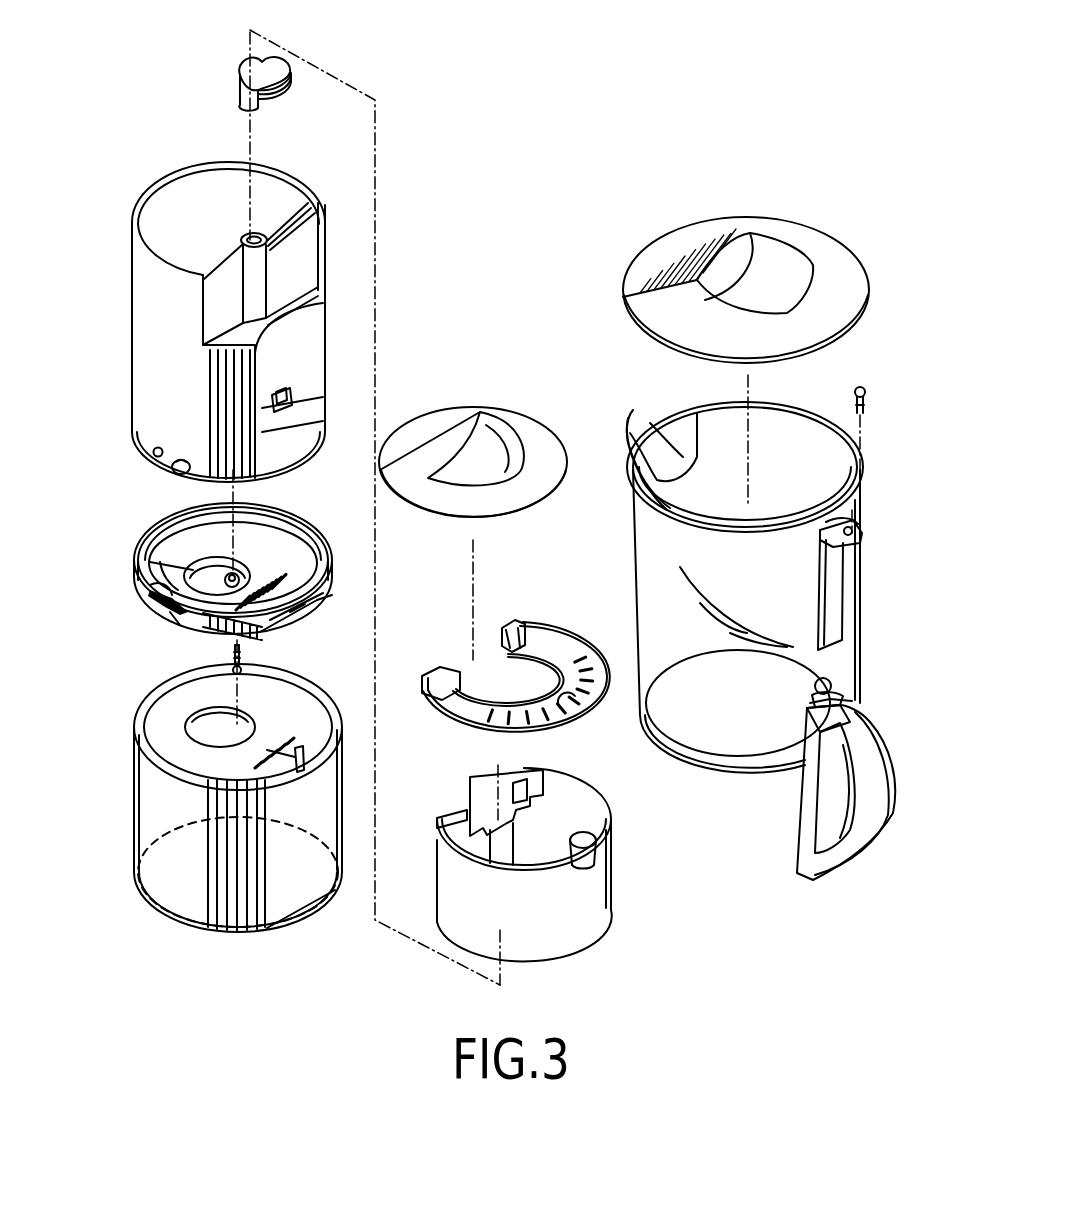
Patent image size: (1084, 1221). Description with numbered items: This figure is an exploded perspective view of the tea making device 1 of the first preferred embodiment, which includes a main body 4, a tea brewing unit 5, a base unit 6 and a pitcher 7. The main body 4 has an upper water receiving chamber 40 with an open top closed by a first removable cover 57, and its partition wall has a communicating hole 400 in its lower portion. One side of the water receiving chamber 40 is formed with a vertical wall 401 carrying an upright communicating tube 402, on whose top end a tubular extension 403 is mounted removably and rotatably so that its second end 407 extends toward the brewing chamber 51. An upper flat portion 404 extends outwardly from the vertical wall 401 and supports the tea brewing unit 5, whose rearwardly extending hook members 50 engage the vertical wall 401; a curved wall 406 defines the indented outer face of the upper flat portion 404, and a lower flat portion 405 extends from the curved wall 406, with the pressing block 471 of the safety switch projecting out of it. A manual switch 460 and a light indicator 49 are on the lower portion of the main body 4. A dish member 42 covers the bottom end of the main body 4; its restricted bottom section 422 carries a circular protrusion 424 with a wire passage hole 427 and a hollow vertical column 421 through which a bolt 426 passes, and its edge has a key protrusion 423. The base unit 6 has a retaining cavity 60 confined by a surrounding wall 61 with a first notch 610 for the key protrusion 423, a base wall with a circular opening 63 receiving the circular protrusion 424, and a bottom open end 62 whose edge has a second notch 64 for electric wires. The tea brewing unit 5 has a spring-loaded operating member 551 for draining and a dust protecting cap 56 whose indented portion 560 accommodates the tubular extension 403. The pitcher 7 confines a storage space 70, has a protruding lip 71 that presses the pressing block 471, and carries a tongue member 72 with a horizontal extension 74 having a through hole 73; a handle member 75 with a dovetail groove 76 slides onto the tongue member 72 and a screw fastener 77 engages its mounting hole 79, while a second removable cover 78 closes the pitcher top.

The coffee grinder and brewer 1 is at (520, 246).
The main body 4 is at (124, 342).
The water receiving chamber 40 is at (190, 210).
The communicating hole 400 is at (180, 410).
The vertical wall 401 is at (300, 228).
The communicating tube 402 is at (260, 263).
The tubular extension 403 is at (257, 67).
The upper flat portion 404 is at (310, 297).
The lower flat portion 405 is at (297, 399).
The curved wall 406 is at (303, 344).
The second end 407 is at (272, 107).
The pressing block 471 is at (290, 393).
The light indicator 49 is at (157, 455).
The manual switch 460 is at (180, 475).
The dish member 42 is at (132, 587).
The hollow vertical column 421 is at (247, 565).
The restricted bottom section 422 is at (173, 620).
The key protrusion 423 is at (293, 610).
The circular protrusion 424 is at (160, 609).
The bolt 426 is at (245, 651).
The wire passage hole 427 is at (165, 562).
The base unit 6 is at (128, 803).
The retaining cavity 60 is at (177, 713).
The surrounding wall 61 is at (142, 724).
The open end 62 is at (173, 905).
The circular opening 63 is at (280, 727).
The second notch 64 is at (168, 826).
The first notch 610 is at (307, 760).
The first removable cover 57 is at (547, 432).
The dust protecting cap 56 is at (587, 608).
The indented portion 560 is at (513, 680).
The tea brewing unit 5 is at (428, 853).
The hook members 50 is at (470, 785).
The brewing chamber 51 is at (587, 820).
The operating member 551 is at (590, 862).
The pitcher 7 is at (866, 623).
The space 70 is at (793, 447).
The protruding lip 71 is at (660, 420).
The tongue member 72 is at (837, 568).
The through hole 73 is at (850, 533).
The horizontal extension 74 is at (878, 527).
The handle member 75 is at (840, 860).
The dovetail groove 76 is at (823, 677).
The screw fastener 77 is at (863, 402).
The second removable cover 78 is at (853, 333).
The mounting hole 79 is at (847, 700).